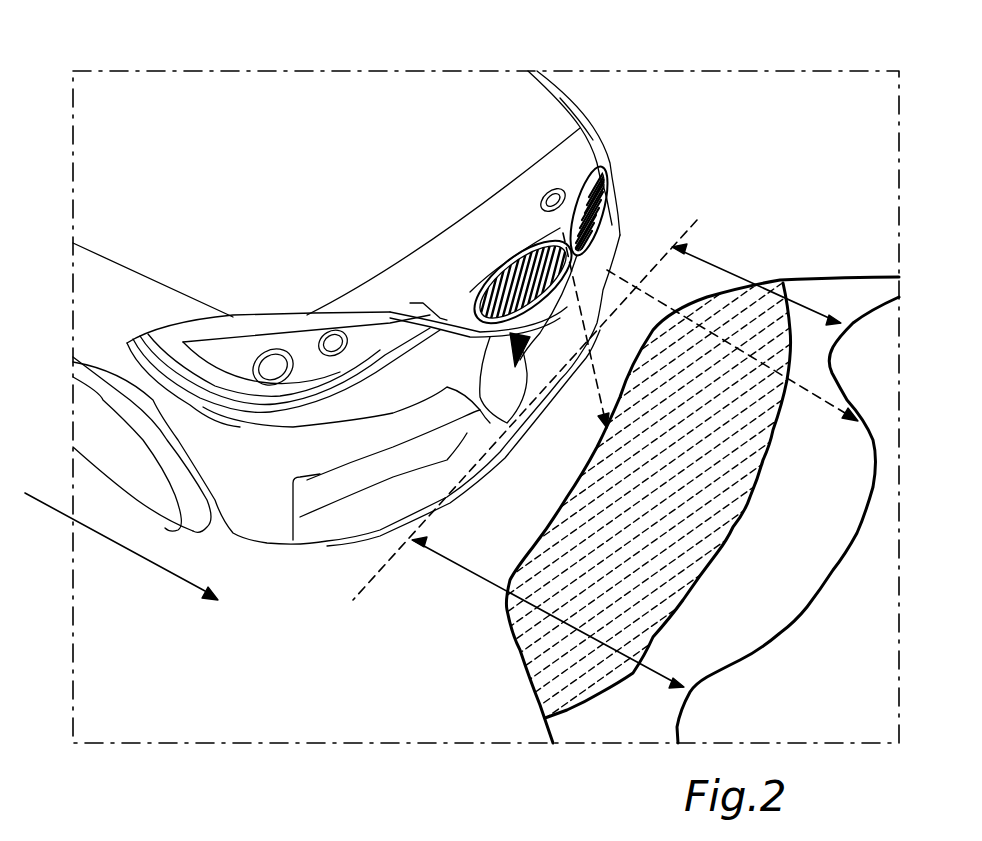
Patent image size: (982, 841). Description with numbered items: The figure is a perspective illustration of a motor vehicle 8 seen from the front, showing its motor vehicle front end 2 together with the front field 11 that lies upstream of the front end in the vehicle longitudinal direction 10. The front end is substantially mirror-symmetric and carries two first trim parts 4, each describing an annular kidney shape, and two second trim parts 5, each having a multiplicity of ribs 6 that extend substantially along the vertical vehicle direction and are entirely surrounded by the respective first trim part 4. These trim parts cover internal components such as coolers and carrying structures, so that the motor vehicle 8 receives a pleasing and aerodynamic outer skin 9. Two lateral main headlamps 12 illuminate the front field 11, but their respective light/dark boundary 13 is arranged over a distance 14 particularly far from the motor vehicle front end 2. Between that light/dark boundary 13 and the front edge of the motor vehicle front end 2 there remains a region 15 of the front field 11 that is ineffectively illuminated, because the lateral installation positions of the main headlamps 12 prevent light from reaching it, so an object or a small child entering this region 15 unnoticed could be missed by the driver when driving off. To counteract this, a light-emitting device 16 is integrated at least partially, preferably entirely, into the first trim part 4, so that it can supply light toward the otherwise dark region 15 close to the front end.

The motor vehicle front end 2 is at (613, 220).
The first trim part 4 is at (478, 277).
The second trim part 5 is at (493, 270).
The ribs 6 is at (537, 240).
The motor vehicle 8 is at (598, 122).
The outer skin 9 is at (263, 117).
The vehicle longitudinal direction 10 is at (117, 548).
The front field 11 is at (806, 526).
The main headlamp 12 is at (577, 112).
The light/dark boundary 13 is at (833, 360).
The distance 14 is at (717, 267).
The region 15 is at (702, 510).
The light-emitting device 16 is at (610, 190).